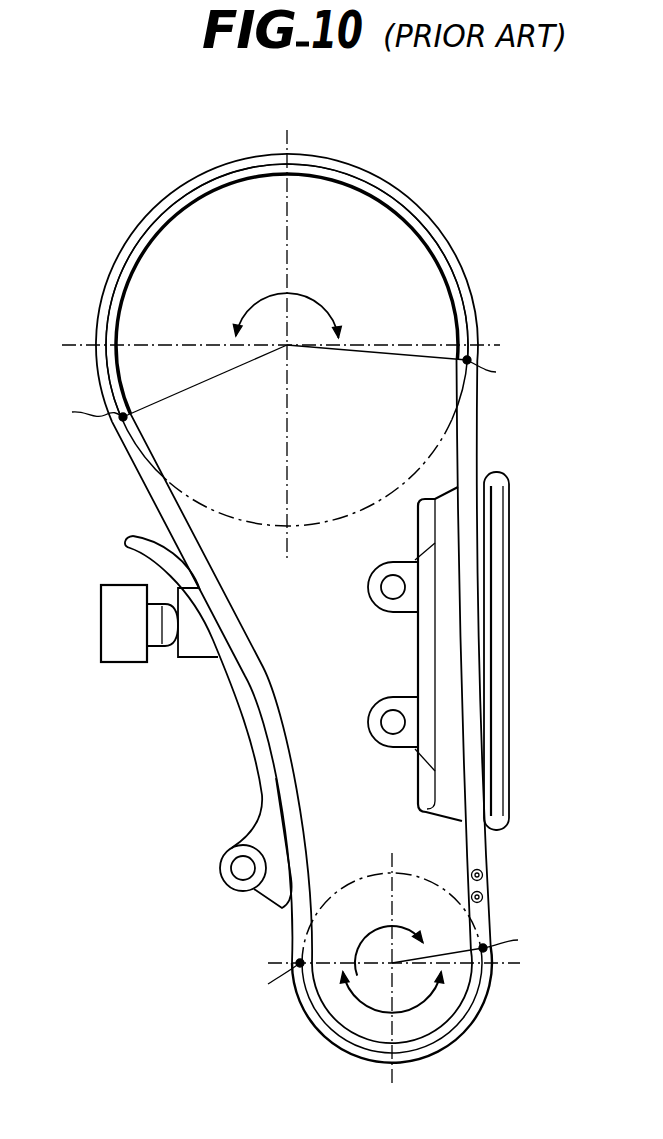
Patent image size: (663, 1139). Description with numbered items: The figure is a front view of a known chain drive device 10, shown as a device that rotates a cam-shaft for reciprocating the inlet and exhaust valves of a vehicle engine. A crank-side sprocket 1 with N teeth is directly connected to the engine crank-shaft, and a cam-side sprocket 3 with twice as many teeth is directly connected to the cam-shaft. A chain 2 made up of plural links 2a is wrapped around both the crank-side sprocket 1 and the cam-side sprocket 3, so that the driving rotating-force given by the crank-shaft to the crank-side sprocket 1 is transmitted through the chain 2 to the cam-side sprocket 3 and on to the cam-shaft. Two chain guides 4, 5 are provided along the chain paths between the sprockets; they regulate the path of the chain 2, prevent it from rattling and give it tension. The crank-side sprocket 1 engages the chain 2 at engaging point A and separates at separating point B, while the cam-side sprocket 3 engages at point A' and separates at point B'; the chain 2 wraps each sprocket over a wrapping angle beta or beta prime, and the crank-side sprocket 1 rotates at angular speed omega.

The crank-side sprocket 1 is at (440, 988).
The chain 2 is at (470, 442).
The links 2a is at (490, 882).
The cam-side sprocket 3 is at (395, 245).
The chain guide 4 is at (505, 633).
The chain guide 5 is at (258, 733).
The chain drive device 10 is at (125, 958).